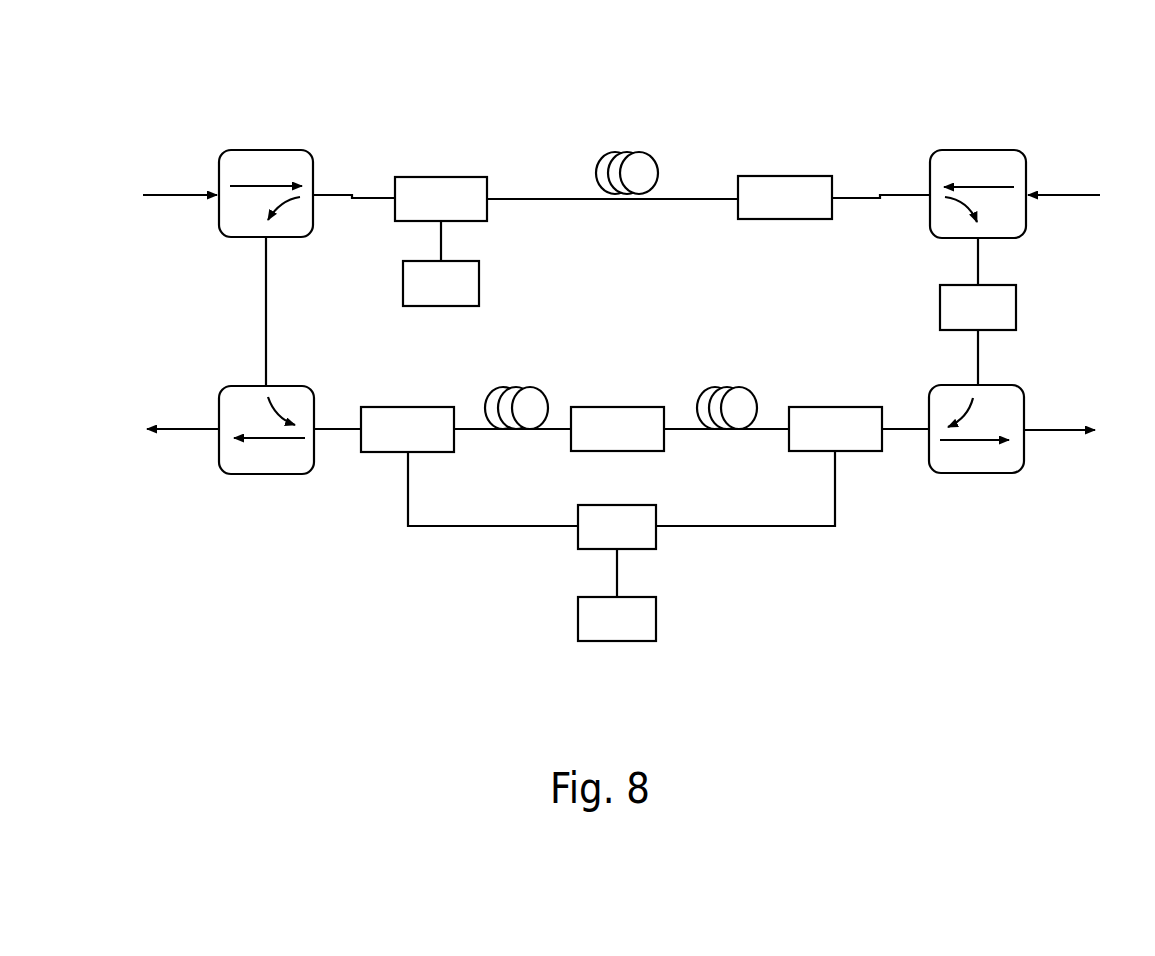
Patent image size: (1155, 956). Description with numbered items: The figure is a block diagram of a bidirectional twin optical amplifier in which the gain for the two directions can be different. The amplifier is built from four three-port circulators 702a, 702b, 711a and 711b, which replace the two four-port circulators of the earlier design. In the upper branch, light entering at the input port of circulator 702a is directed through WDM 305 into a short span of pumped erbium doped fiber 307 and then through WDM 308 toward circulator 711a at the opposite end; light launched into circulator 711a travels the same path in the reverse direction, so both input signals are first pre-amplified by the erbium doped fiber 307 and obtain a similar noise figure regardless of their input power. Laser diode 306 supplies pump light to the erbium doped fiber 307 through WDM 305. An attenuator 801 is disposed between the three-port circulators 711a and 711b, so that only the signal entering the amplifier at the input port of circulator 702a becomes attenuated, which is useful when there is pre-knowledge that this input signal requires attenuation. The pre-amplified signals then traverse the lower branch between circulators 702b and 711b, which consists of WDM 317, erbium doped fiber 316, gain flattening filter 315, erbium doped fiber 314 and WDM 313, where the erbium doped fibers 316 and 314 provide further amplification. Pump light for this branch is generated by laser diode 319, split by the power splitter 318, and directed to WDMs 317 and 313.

The 3-port circulator 702a is at (237, 160).
The 3-port circulator 702b is at (232, 400).
The WDM 305 is at (444, 177).
The LD 306 is at (479, 287).
The erbium doped fiber 307 is at (625, 152).
The WDM 308 is at (792, 172).
The 3-port circulator 711a is at (1011, 158).
The 3-port circulator 711b is at (1013, 405).
The attenuator 801 is at (1016, 310).
The WDM 317 is at (420, 407).
The EDFA 316 is at (521, 387).
The GFF 315 is at (620, 407).
The EDFA 314 is at (735, 388).
The WDM 313 is at (847, 407).
The power splitter 318 is at (656, 535).
The LD 319 is at (656, 620).